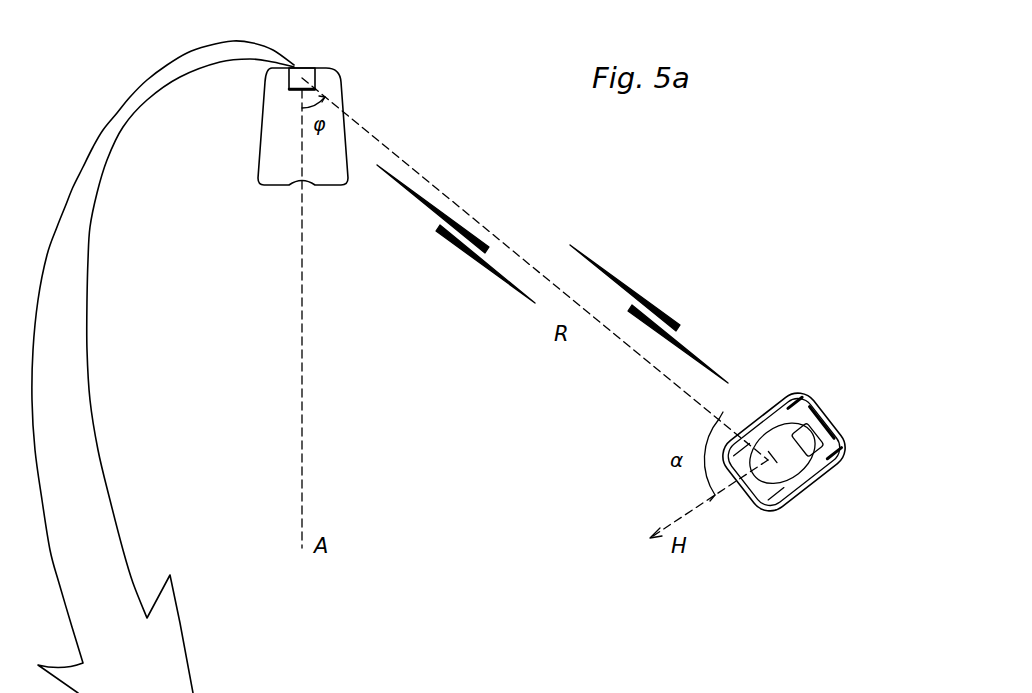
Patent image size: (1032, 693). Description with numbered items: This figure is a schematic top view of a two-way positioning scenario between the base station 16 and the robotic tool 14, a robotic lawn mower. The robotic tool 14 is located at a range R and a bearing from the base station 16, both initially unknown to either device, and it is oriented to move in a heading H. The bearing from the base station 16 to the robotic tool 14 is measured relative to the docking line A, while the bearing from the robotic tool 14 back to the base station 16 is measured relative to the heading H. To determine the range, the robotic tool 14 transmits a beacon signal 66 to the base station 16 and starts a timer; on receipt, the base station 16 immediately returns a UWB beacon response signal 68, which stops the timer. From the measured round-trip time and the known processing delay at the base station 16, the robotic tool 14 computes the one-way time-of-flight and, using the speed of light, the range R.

The robotic tool 14 is at (830, 412).
The base station 16 is at (270, 130).
The beacon signal 66 is at (667, 317).
The UWB beacon response signal 68 is at (460, 247).